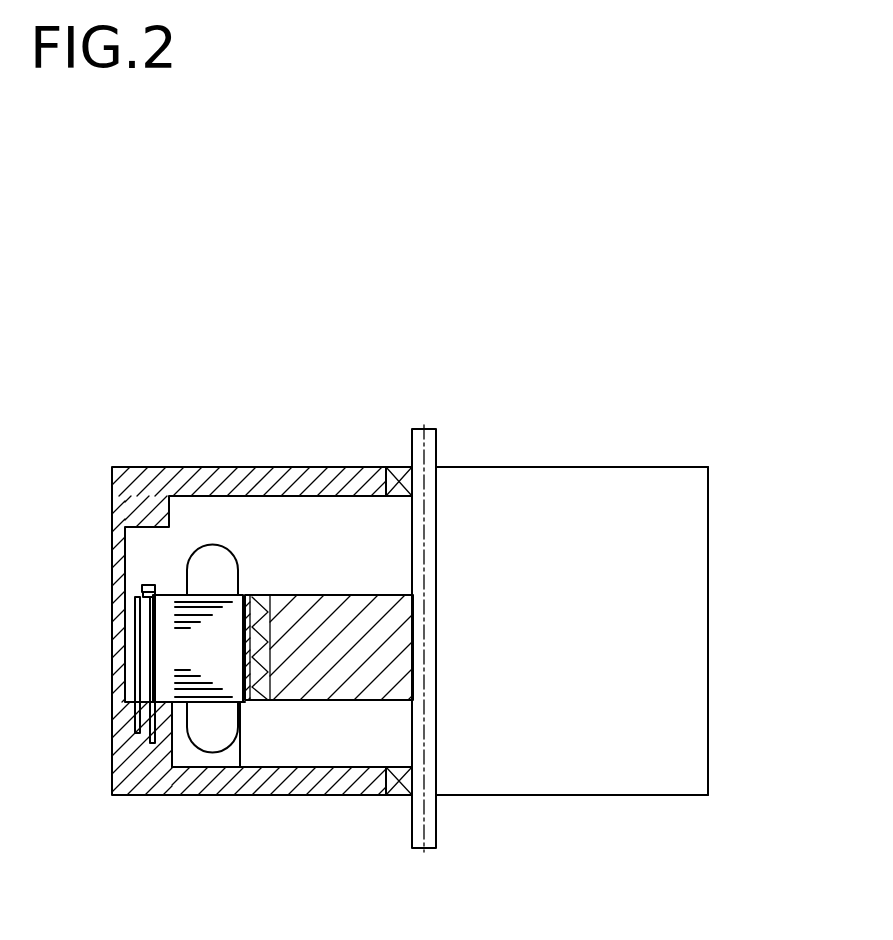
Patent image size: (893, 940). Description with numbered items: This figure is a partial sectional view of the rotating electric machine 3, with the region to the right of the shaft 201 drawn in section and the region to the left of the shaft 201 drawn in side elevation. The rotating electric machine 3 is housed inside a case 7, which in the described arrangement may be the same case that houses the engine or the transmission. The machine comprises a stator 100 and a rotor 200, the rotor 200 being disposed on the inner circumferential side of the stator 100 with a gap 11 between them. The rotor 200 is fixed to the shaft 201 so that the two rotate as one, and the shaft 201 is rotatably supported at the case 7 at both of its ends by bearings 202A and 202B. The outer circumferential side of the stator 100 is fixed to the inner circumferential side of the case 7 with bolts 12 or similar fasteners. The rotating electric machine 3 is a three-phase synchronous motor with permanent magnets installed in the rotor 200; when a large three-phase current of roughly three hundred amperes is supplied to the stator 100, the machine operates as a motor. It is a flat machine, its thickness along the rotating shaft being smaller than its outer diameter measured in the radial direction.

The rotating electric machine 3 is at (762, 483).
The case 7 is at (487, 485).
The gap 11 is at (240, 723).
The bolts 12 is at (150, 580).
The stator 100 is at (213, 718).
The rotor 200 is at (305, 625).
The shaft 201 is at (436, 553).
The bearing 202A is at (397, 476).
The bearing 202B is at (398, 795).